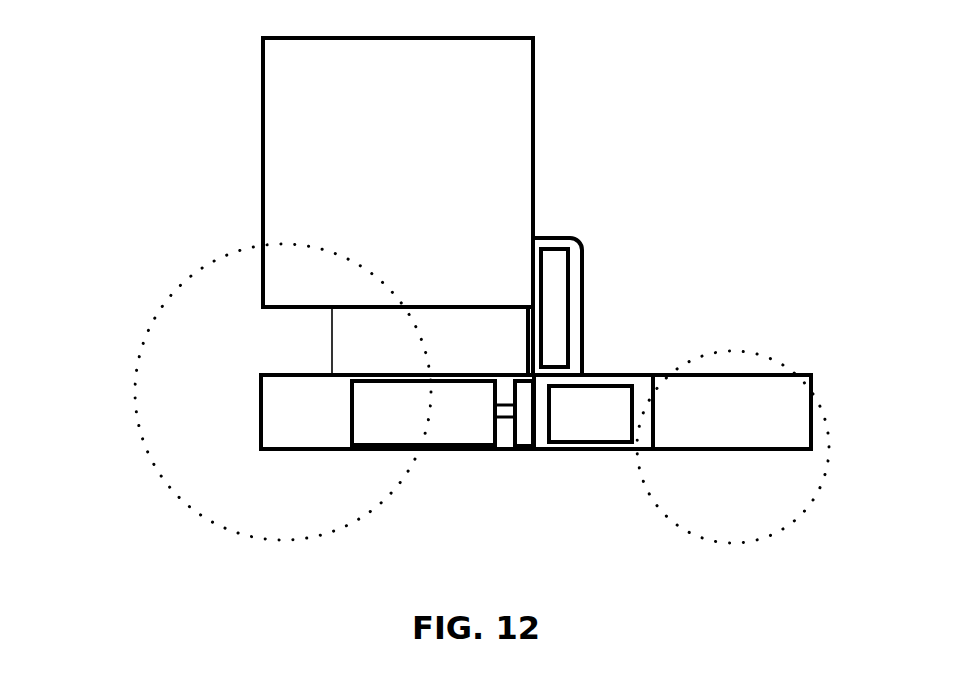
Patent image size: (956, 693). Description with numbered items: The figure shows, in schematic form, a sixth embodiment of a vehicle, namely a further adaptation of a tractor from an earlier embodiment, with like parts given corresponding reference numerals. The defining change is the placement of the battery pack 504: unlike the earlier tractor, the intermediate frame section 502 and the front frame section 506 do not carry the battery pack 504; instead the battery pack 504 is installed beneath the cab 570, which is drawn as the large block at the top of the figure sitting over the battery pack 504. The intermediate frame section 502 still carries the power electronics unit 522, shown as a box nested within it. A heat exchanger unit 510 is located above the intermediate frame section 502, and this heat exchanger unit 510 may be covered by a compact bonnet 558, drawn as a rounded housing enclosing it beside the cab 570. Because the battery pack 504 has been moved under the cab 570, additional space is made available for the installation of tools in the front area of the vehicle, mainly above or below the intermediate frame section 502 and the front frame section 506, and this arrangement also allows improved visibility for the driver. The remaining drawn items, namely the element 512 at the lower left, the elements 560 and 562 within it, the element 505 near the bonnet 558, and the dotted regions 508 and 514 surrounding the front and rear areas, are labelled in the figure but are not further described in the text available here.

The cab 570 is at (398, 172).
The battery pack 504 is at (398, 341).
The base 512 is at (397, 412).
The battery 560 is at (452, 427).
The connector 562 is at (518, 433).
The compact bonnet 558 is at (578, 243).
The heat exchanger unit 510 is at (555, 302).
The gap 505 is at (570, 365).
The intermediate frame section 502 is at (645, 433).
The power electronics unit 522 is at (590, 414).
The front frame section 506 is at (765, 400).
The region 508 is at (772, 512).
The region 514 is at (143, 365).